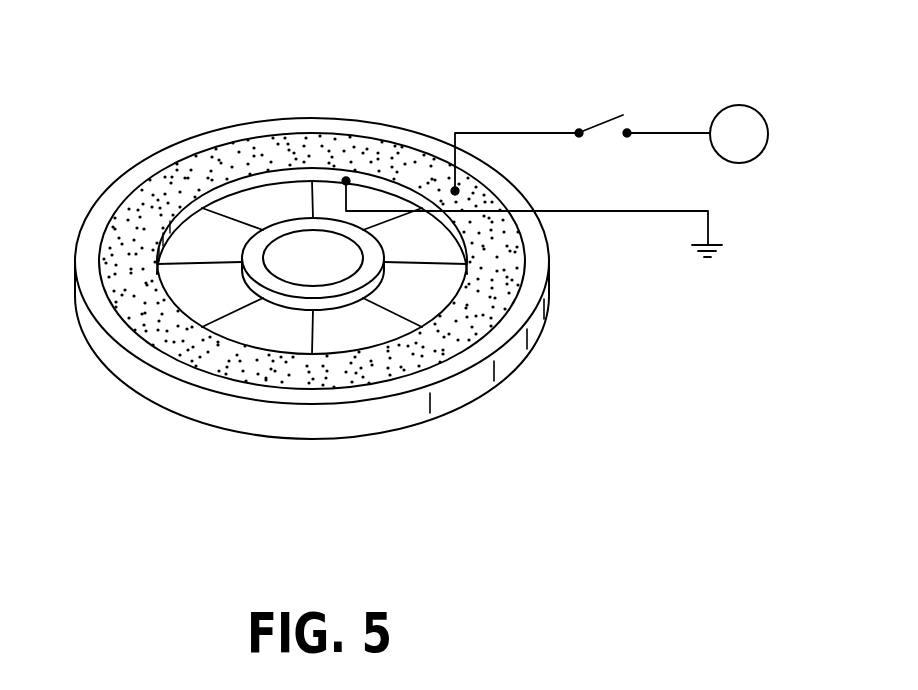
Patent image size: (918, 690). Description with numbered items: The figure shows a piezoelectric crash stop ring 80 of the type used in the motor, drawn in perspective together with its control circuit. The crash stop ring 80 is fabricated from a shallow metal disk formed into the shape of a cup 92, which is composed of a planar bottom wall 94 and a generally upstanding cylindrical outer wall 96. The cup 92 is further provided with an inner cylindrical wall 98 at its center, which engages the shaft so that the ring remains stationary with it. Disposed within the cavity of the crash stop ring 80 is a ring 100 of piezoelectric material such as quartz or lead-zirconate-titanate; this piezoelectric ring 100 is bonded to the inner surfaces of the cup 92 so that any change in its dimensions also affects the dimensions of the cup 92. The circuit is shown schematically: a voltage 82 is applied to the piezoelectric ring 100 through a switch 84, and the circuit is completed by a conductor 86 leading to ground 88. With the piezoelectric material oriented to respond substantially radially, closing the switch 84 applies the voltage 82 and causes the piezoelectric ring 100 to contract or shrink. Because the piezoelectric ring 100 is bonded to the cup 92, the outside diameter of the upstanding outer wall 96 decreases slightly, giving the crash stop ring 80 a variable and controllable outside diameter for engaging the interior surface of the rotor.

The crash stop ring 80 is at (415, 234).
The voltage 82 is at (768, 120).
The switch 84 is at (598, 112).
The conductor 86 is at (688, 211).
The ground 88 is at (714, 250).
The cup 92 is at (337, 278).
The planar bottom wall 94 is at (377, 328).
The cylindrical outer wall 96 is at (83, 283).
The inner cylindrical wall 98 is at (310, 223).
The piezoelectric ring 100 is at (186, 182).